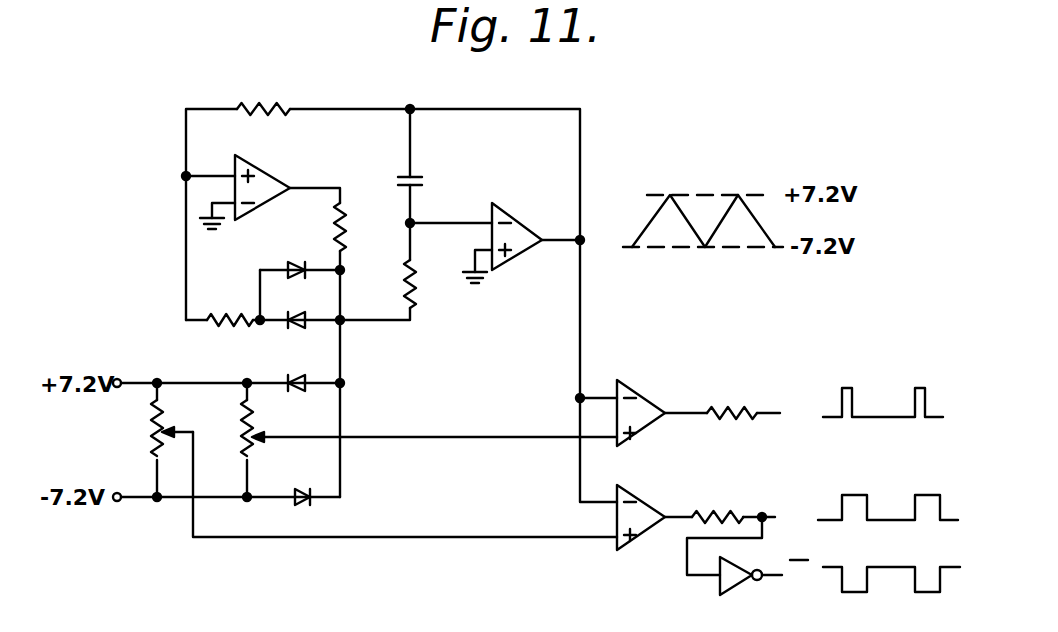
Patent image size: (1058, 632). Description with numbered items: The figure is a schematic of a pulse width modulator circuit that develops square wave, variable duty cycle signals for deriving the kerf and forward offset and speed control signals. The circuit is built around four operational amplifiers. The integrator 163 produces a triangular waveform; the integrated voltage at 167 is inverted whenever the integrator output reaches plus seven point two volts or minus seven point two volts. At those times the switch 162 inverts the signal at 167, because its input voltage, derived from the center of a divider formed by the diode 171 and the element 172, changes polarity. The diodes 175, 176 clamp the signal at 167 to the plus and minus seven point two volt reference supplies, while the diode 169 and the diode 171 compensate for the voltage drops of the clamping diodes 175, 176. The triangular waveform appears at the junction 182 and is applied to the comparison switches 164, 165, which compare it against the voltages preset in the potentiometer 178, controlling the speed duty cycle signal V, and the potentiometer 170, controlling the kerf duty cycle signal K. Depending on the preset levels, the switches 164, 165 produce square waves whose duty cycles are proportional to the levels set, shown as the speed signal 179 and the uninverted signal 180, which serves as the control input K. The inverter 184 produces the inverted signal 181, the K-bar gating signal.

The switch 162 is at (272, 184).
The integrator 163 is at (525, 229).
The comparison switch 164 is at (650, 400).
The comparison switch 165 is at (645, 506).
The integrated voltage point 167 is at (344, 323).
The diode 169 is at (285, 324).
The potentiometer 170 is at (152, 420).
The diode 171 is at (297, 263).
The divider element 172 is at (226, 316).
The diode 175 is at (298, 374).
The diode 176 is at (300, 506).
The potentiometer 178 is at (256, 424).
The speed duty cycle signal V 179 is at (853, 400).
The uninverted signal K 180 is at (885, 478).
The inverted signal K-bar 181 is at (897, 570).
The junction 182 is at (578, 244).
The inverter 184 is at (722, 583).